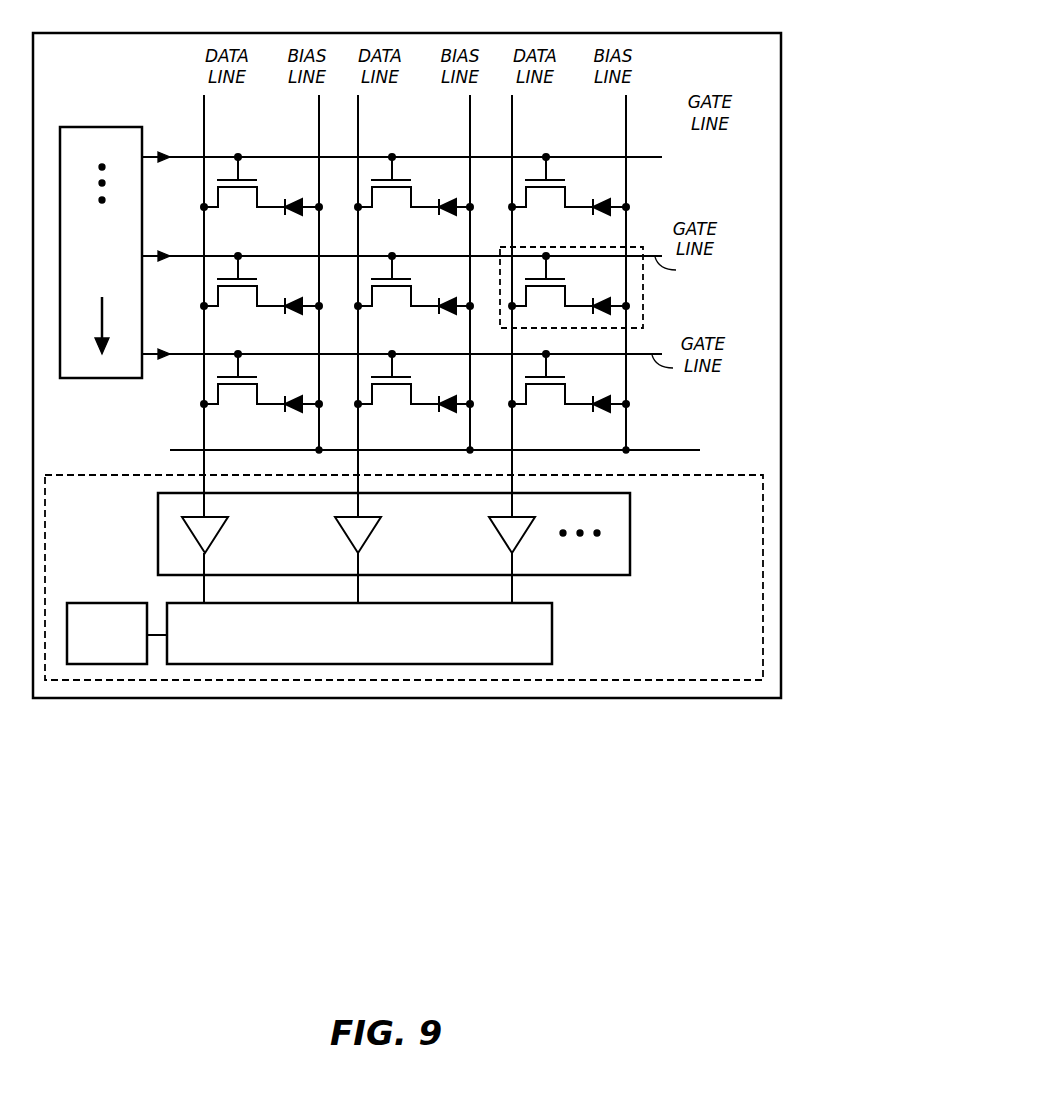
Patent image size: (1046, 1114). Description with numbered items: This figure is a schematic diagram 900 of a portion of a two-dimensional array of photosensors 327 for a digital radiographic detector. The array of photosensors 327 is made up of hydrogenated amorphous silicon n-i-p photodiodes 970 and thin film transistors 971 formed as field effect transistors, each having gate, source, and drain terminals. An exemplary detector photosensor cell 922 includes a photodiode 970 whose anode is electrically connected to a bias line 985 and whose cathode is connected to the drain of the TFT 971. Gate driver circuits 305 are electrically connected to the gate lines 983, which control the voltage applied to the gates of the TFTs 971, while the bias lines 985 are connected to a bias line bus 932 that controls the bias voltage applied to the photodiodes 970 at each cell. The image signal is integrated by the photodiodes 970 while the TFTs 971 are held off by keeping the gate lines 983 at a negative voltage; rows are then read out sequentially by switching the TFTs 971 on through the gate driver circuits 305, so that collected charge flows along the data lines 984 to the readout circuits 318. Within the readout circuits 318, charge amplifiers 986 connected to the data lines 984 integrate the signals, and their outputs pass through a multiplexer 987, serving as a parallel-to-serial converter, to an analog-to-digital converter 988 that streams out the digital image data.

The schematic diagram 900 is at (862, 38).
The gate driver circuits 305 is at (75, 127).
The array of photosensors 327 is at (653, 99).
The gate lines 983 is at (662, 157).
The data lines 984 is at (358, 132).
The bias lines 985 is at (318, 145).
The thin film transistor 971 is at (543, 154).
The photodiode 970 is at (610, 205).
The detector photosensor cell 922 is at (645, 292).
The bias line bus 932 is at (475, 438).
The readout circuits 318 is at (470, 577).
The charge amplifiers 986 is at (630, 533).
The multiplexer 987 is at (552, 630).
The analog-to-digital converter 988 is at (96, 603).